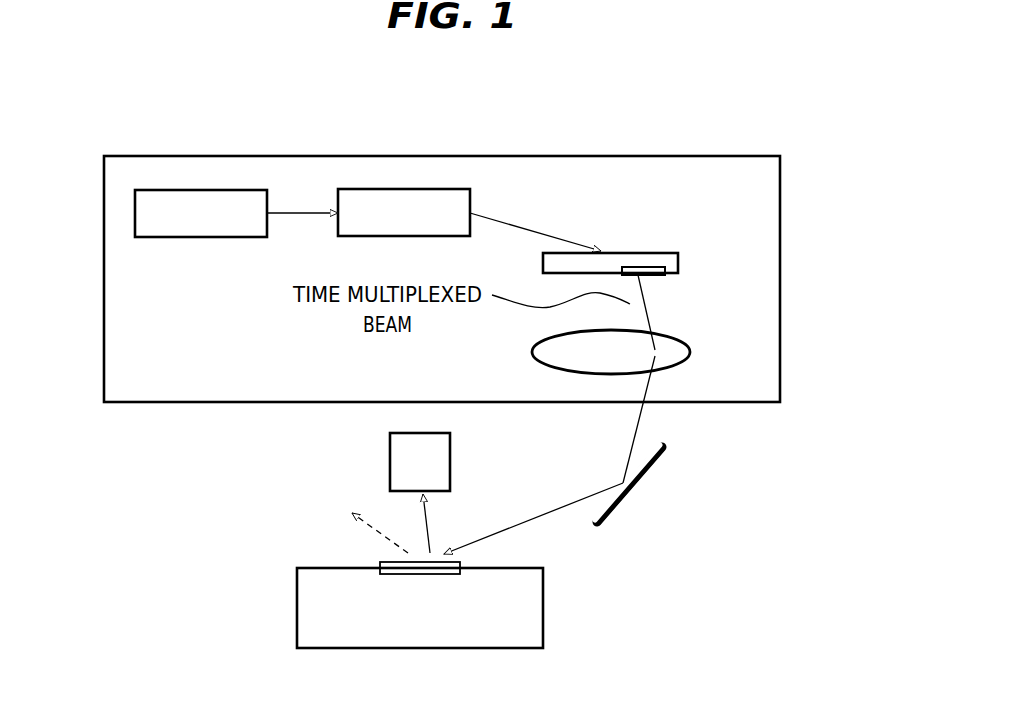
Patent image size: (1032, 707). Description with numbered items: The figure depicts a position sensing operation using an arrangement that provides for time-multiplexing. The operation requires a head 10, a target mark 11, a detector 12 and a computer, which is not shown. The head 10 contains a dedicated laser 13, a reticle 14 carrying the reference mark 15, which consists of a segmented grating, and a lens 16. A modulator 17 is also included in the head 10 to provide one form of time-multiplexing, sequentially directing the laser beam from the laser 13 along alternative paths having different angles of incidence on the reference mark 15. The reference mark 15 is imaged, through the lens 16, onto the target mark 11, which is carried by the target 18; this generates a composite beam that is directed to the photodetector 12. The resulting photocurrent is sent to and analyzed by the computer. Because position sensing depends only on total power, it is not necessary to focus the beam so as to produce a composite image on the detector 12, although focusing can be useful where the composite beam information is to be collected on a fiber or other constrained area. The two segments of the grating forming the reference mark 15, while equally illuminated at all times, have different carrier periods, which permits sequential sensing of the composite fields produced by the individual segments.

The head 10 is at (703, 156).
The target mark 11 is at (388, 562).
The detector 12 is at (390, 462).
The laser 13 is at (208, 190).
The reticle 14 is at (678, 258).
The reference mark 15 is at (658, 275).
The lens 16 is at (677, 372).
The modulator 17 is at (393, 189).
The target 18 is at (543, 598).